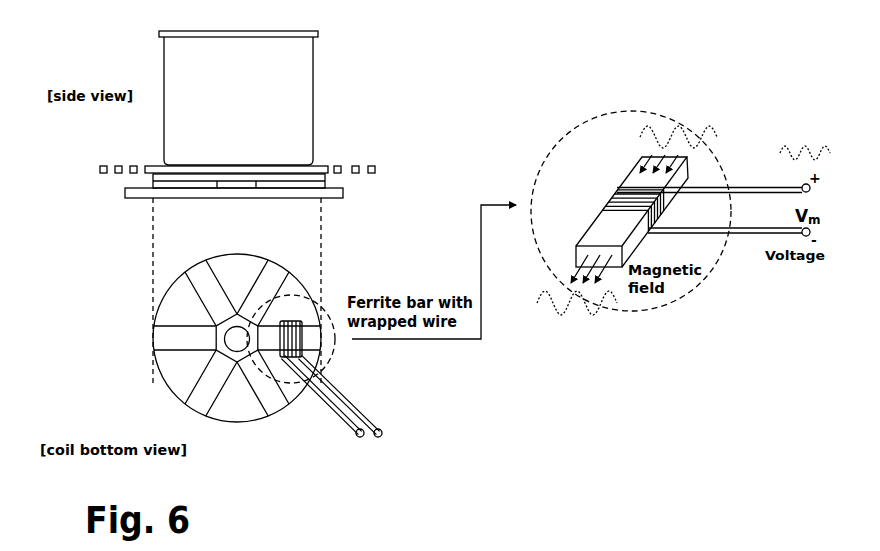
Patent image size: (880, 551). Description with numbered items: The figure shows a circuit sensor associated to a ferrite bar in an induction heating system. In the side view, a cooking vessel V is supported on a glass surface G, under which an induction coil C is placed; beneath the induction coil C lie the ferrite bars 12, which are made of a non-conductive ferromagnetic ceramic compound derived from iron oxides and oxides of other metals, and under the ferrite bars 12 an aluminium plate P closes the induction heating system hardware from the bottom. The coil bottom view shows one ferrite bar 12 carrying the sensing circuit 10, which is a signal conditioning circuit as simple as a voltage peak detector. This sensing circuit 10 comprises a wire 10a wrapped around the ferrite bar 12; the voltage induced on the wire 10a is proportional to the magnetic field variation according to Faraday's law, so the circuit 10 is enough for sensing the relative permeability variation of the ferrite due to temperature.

The signal conditioning circuit 10 is at (345, 361).
The wire 10a is at (610, 187).
The ferrite bar 12 is at (287, 187).
The cooking vessel V is at (295, 82).
The glass surface G is at (327, 166).
The induction coil C is at (317, 178).
The aluminium plate P is at (137, 197).